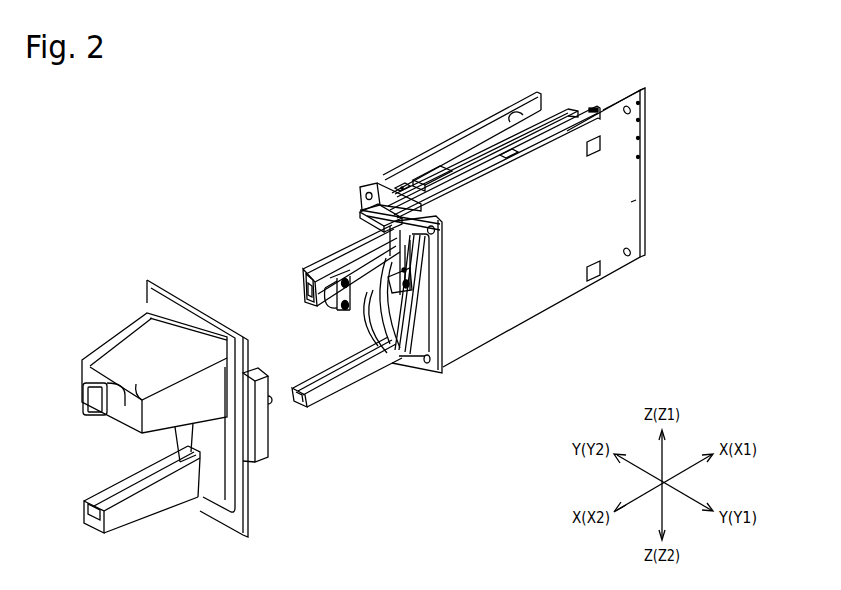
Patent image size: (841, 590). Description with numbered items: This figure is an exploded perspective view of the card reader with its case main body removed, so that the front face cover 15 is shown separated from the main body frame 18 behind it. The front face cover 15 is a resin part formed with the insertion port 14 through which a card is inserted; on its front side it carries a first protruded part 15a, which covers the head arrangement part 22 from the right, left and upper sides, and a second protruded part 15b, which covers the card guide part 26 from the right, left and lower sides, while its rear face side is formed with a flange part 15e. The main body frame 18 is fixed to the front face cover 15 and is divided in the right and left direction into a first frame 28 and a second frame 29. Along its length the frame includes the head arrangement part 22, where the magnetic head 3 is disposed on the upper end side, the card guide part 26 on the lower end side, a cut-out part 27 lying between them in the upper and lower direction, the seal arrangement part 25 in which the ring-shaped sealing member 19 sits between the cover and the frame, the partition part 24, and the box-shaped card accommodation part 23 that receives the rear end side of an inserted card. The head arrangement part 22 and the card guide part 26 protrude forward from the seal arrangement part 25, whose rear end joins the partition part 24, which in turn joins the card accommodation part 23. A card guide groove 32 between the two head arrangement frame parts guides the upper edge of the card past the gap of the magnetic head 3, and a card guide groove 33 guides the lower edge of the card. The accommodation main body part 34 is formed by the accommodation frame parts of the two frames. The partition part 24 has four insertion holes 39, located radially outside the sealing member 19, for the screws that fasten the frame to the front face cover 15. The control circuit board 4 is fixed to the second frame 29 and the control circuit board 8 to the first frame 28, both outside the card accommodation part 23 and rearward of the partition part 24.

The magnetic head 3 is at (362, 302).
The control circuit board 4 is at (627, 93).
The control circuit board 8 is at (517, 101).
The insertion port 14 is at (97, 397).
The front face cover 15 is at (154, 376).
The first protruded part 15a is at (118, 332).
The second protruded part 15b is at (150, 518).
The flange part 15e is at (198, 306).
The main body frame 18 is at (483, 153).
The sealing member 19 is at (400, 185).
The head arrangement part 22 is at (322, 263).
The card accommodation part 23 is at (463, 167).
The partition part 24 is at (362, 192).
The seal arrangement part 25 is at (360, 213).
The card guide part 26 is at (360, 377).
The cut-out part 27 is at (296, 349).
The first frame 28 is at (495, 147).
The second frame 29 is at (332, 393).
The card guide groove 32 is at (305, 292).
The card guide groove 33 is at (297, 397).
The accommodation main body part 34 is at (568, 122).
The insertion holes 39 is at (369, 190).